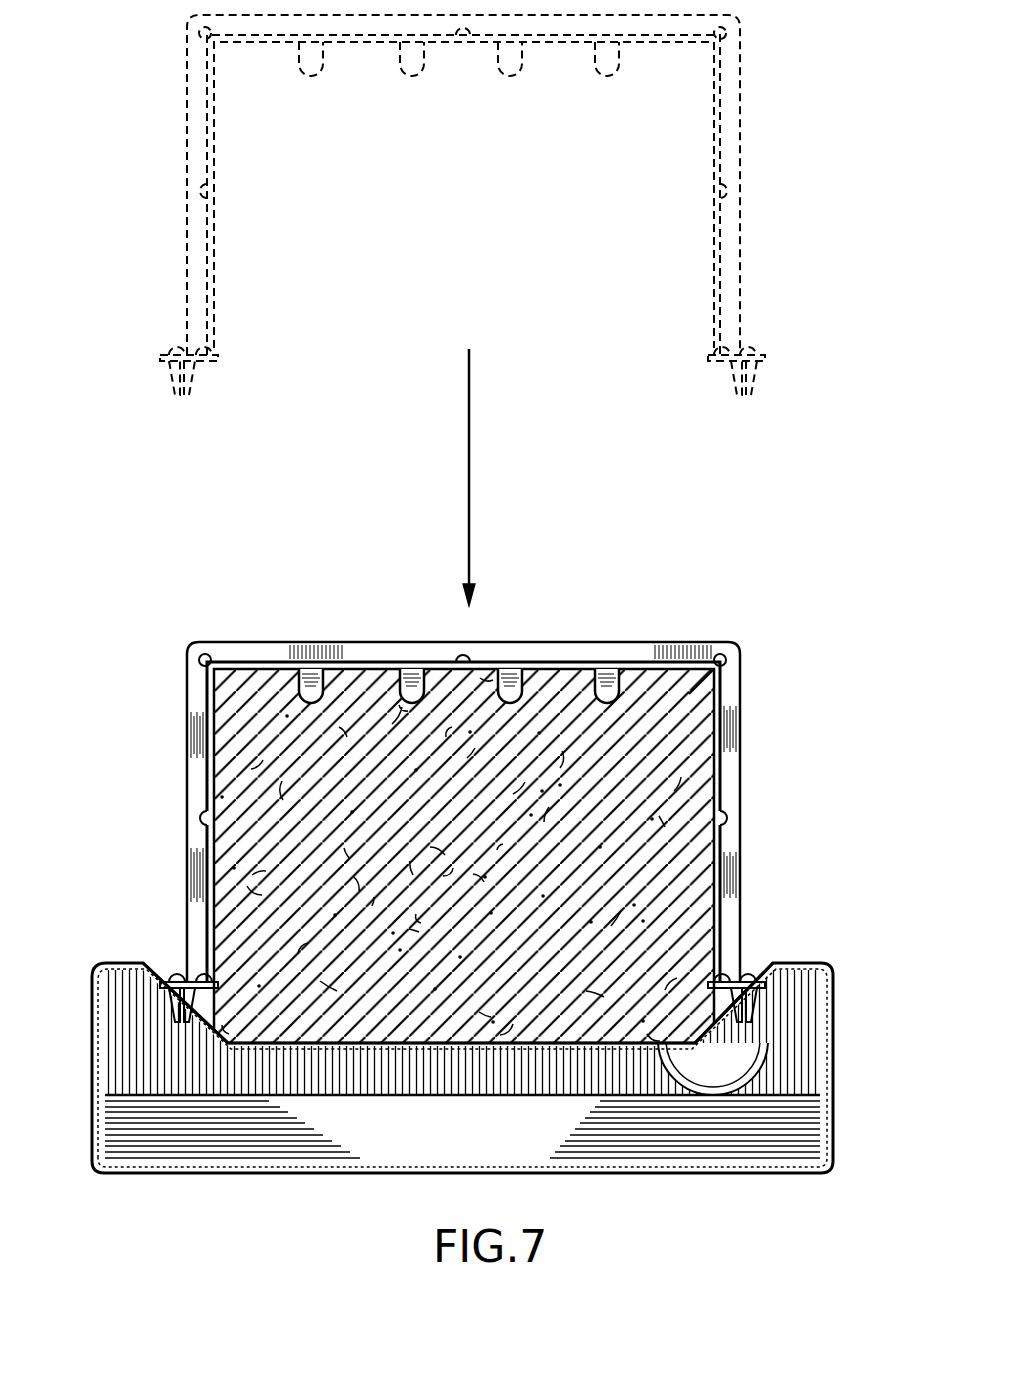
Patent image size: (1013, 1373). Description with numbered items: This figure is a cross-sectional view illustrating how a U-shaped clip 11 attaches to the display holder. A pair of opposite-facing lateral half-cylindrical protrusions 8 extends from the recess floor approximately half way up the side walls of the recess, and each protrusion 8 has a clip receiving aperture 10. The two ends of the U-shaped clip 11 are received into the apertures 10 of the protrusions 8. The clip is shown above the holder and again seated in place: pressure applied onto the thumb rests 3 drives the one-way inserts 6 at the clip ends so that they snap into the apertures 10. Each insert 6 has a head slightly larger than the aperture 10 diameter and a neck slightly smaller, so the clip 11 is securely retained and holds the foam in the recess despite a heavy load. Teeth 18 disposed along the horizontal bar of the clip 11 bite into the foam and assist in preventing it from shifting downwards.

The thumb rest 3 is at (756, 962).
The one-way insert 6 is at (764, 1010).
The lateral half-cylindrical protrusion 8 is at (208, 1022).
The clip receiving aperture 10 is at (762, 995).
The U-shaped clip 11 is at (539, 857).
The teeth 18 is at (633, 691).